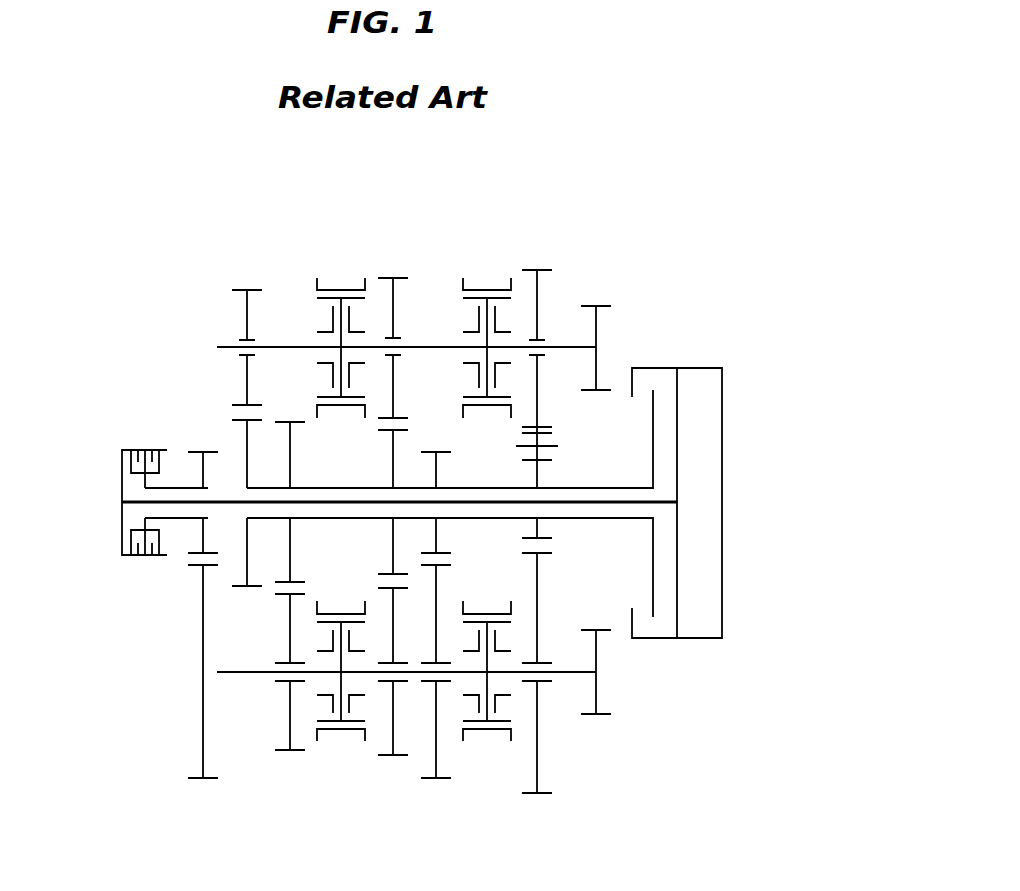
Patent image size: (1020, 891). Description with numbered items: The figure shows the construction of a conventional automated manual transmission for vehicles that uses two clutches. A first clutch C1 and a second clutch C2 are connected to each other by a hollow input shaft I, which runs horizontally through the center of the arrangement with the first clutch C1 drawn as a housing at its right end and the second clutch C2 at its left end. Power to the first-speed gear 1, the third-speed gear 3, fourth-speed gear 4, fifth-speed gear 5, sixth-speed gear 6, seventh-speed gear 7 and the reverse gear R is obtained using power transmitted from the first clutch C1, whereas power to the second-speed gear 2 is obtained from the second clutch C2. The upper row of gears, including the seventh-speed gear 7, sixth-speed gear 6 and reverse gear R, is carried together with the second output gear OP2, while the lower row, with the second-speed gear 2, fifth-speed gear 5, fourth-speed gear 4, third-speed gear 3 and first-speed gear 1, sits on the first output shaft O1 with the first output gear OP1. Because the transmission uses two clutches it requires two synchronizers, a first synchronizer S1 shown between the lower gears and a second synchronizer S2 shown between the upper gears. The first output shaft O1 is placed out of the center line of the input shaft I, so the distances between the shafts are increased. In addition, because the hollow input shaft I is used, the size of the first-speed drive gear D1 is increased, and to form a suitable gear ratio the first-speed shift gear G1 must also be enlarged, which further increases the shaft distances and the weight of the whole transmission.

The first-speed gear 1 is at (537, 677).
The second-speed gear 2 is at (203, 644).
The third-speed gear 3 is at (436, 644).
The fourth-speed gear 4 is at (392, 677).
The fifth-speed gear 5 is at (290, 629).
The sixth-speed gear 6 is at (393, 365).
The seventh-speed gear 7 is at (247, 371).
The reverse gear R is at (537, 363).
The first output gear OP1 is at (608, 696).
The second output gear OP2 is at (622, 348).
The first clutch C1 is at (712, 366).
The second clutch C2 is at (136, 447).
The first-speed drive gear D1 is at (565, 490).
The first synchronizer S1 is at (490, 755).
The second synchronizer S2 is at (343, 247).
The first-speed shift gear G1 is at (565, 688).
The hollow input shaft I is at (605, 553).
The first output shaft O1 is at (540, 767).